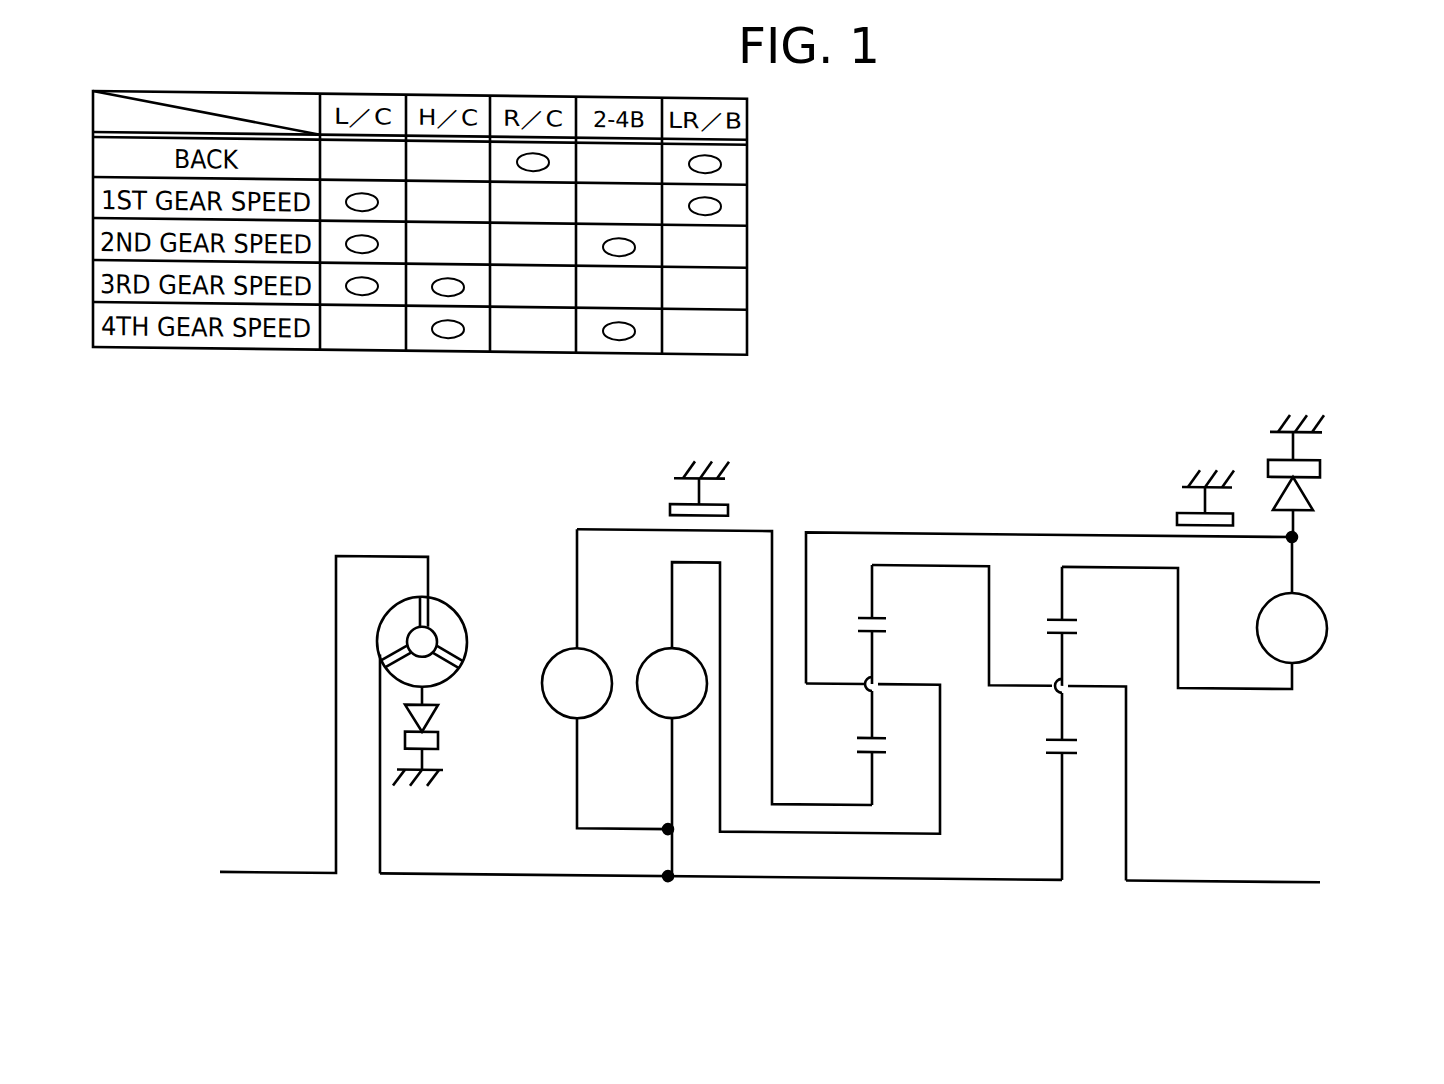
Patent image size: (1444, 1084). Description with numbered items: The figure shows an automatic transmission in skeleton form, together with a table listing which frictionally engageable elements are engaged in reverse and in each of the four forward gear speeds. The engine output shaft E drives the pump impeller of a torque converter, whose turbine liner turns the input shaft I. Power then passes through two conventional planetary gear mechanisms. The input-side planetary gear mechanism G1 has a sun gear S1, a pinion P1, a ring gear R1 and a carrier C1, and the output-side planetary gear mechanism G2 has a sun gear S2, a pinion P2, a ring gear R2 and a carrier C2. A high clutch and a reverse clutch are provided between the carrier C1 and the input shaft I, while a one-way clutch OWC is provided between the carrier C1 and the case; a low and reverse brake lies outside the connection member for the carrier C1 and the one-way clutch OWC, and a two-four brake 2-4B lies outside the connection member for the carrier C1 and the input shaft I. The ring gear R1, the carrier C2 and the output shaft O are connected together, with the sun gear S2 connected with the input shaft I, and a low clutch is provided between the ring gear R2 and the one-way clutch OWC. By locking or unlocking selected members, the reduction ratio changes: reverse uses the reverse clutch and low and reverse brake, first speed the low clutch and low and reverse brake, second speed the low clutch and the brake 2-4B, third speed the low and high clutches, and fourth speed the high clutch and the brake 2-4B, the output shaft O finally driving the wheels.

The output shaft of an engine E is at (278, 877).
The input shaft I is at (485, 877).
The output shaft O is at (1196, 877).
The 2-4 brake 2-4B is at (670, 510).
The one-way clutch OWC is at (1310, 492).
The input-side planetary gear mechanism G1 is at (1049, 636).
The ring gear R1 is at (872, 591).
The carrier C1 is at (826, 683).
The pinion P1 is at (872, 709).
The sun gear S1 is at (872, 776).
The output-side planetary gear mechanism G2 is at (1147, 673).
The ring gear R2 is at (1062, 591).
The carrier C2 is at (1017, 683).
The pinion P2 is at (1062, 708).
The sun gear S2 is at (1062, 800).